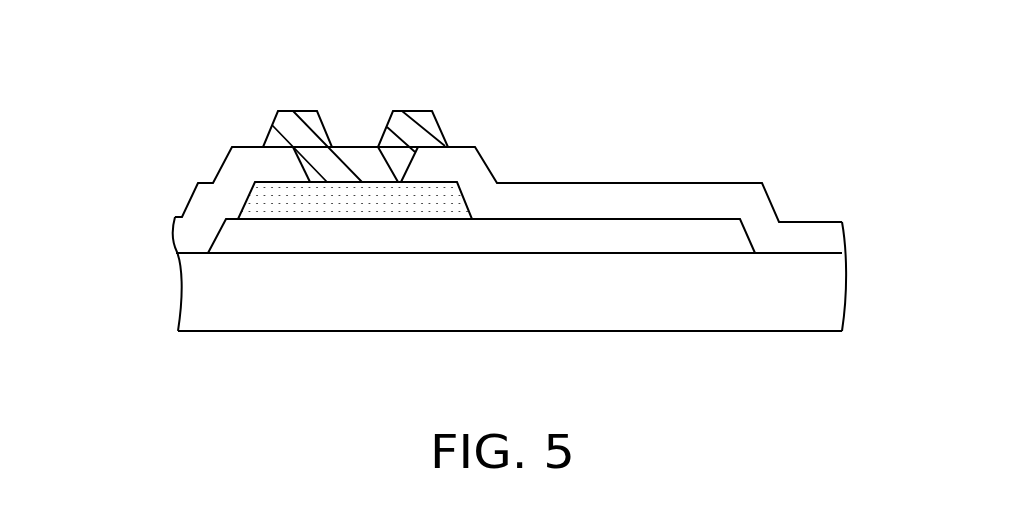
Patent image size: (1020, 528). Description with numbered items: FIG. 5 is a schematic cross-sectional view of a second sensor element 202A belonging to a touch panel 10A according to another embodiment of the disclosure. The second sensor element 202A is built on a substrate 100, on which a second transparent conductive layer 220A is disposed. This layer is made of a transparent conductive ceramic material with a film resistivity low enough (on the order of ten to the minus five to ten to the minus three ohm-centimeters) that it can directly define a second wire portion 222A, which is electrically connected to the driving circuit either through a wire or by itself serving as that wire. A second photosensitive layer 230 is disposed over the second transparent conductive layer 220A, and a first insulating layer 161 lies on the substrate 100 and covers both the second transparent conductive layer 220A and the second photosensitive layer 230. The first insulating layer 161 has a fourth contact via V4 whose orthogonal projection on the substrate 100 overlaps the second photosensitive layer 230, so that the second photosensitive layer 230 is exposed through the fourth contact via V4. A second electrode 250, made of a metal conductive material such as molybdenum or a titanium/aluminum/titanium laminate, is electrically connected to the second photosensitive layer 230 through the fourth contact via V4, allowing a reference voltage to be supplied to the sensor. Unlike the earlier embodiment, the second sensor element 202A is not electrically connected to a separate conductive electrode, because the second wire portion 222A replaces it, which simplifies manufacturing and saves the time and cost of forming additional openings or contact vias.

The touch panel 10A is at (904, 398).
The substrate 100 is at (830, 293).
The first insulating layer 161 is at (830, 238).
The second sensor element 202A is at (105, 93).
The second transparent conductive layer 220A is at (232, 240).
The second wire portion 222A is at (602, 230).
The second photosensitive layer 230 is at (262, 202).
The second electrode 250 is at (282, 129).
The fourth contact via V4 is at (300, 159).